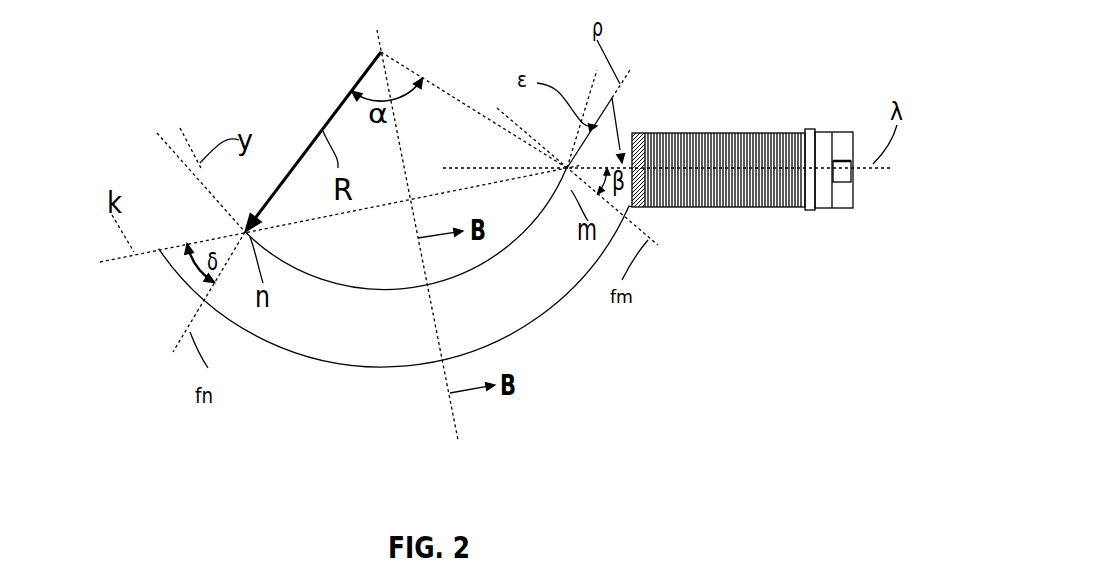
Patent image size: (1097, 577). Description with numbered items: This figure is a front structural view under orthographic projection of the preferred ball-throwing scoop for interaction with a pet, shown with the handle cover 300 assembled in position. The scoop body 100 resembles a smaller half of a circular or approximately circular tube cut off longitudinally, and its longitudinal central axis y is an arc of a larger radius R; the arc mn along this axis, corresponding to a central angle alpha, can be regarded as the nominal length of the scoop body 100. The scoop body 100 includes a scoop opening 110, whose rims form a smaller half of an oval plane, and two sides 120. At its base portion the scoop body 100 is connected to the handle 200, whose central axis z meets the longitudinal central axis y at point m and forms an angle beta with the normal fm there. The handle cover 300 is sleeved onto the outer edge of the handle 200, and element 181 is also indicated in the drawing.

The scoop body 100 is at (367, 304).
The scoop opening 110 is at (172, 262).
The sides 120 is at (403, 290).
The tube end connection point 181 is at (614, 98).
The handle 200 is at (757, 208).
The handle cover 300 is at (838, 200).